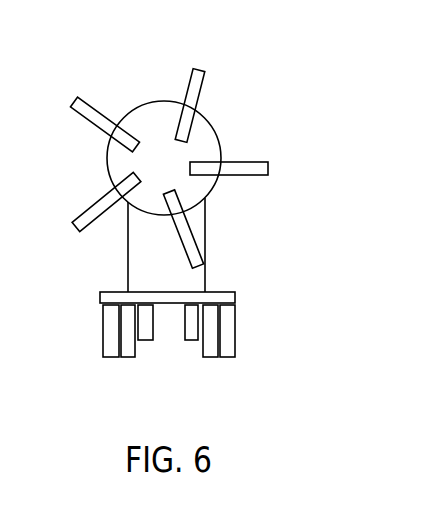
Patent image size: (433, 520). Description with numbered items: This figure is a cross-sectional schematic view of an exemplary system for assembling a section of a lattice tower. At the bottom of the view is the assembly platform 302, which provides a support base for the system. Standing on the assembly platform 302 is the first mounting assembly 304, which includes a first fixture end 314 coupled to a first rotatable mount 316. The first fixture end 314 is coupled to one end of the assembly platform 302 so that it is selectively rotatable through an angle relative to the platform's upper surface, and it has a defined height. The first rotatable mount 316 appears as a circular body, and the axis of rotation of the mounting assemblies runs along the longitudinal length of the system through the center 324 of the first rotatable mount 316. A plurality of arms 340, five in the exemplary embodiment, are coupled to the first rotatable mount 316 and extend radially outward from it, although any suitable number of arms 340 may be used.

The assembly platform 302 is at (235, 297).
The first mounting assembly 304 is at (135, 272).
The first fixture end 314 is at (135, 243).
The first rotatable mount 316 is at (207, 185).
The center of first rotatable mount 324 is at (163, 160).
The arms 340 is at (203, 68).